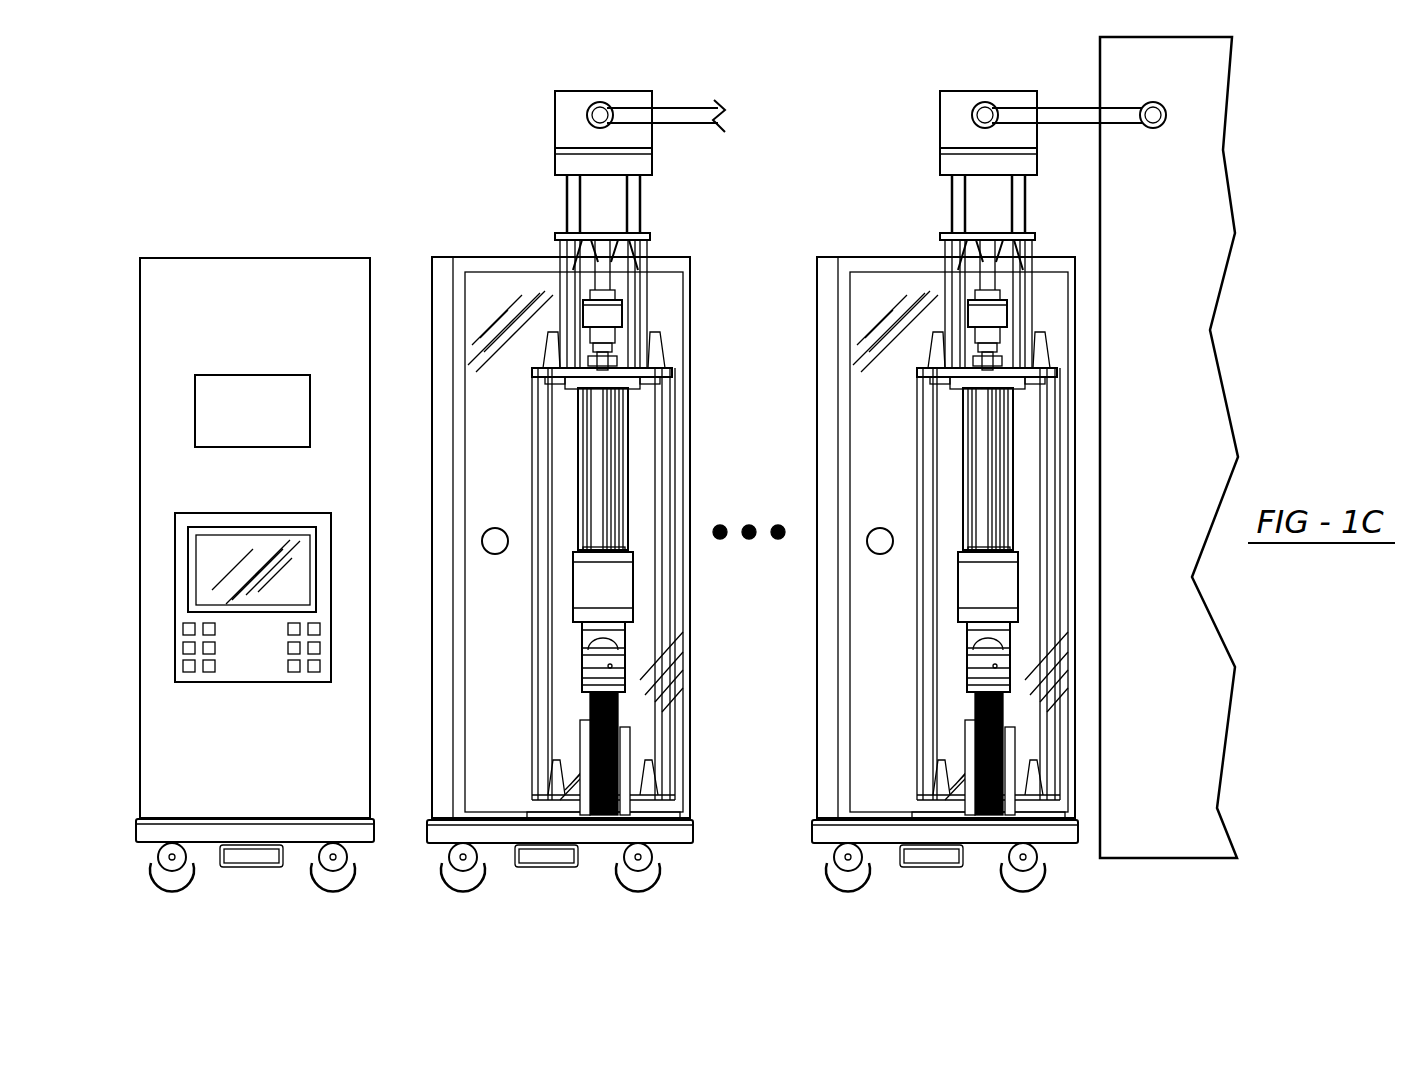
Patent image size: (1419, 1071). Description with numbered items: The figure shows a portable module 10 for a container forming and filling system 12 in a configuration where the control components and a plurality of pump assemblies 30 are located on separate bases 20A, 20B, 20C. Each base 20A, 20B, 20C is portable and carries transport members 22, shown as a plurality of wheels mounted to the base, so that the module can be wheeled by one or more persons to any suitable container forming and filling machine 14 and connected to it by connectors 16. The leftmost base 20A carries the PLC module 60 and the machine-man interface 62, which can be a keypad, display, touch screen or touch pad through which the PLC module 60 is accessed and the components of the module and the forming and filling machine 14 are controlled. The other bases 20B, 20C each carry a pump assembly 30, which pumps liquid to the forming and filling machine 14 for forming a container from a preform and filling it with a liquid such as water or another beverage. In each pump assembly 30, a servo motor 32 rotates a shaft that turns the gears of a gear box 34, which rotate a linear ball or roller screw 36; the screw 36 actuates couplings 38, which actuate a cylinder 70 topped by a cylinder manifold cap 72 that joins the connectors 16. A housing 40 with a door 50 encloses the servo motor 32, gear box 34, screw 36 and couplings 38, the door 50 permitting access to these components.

The portable module 10 is at (210, 138).
The container forming and filling system 12 is at (815, 194).
The container forming and filling machine 14 is at (1133, 708).
The connectors 16 is at (686, 108).
The base 20A is at (284, 830).
The base 20B is at (492, 830).
The base 20C is at (945, 636).
The transport members 22 is at (160, 878).
The pump assembly 30 is at (565, 584).
The servo motor 32 is at (598, 818).
The gear box 34 is at (590, 632).
The ball or roller screw 36 is at (603, 473).
The couplings 38 is at (622, 312).
The housing 40 is at (463, 257).
The door 50 is at (485, 295).
The PLC module 60 is at (275, 375).
The machine-man interface (MMI) 62 is at (273, 682).
The cylinder 70 is at (565, 160).
The cylinder manifold cap 72 is at (565, 105).